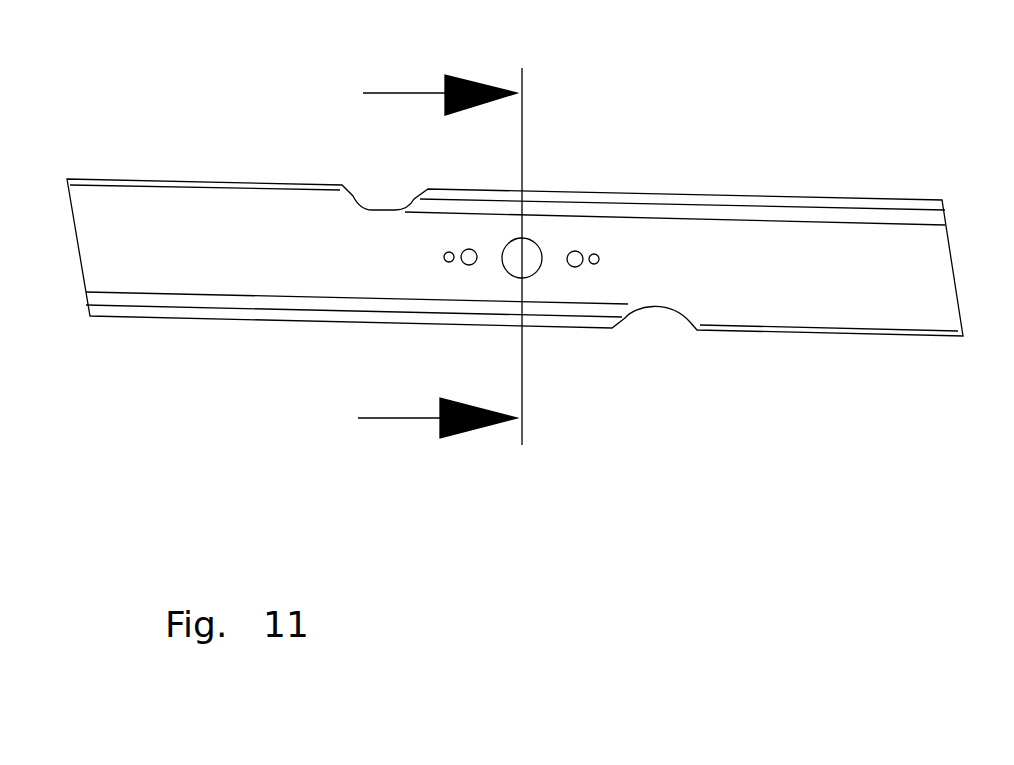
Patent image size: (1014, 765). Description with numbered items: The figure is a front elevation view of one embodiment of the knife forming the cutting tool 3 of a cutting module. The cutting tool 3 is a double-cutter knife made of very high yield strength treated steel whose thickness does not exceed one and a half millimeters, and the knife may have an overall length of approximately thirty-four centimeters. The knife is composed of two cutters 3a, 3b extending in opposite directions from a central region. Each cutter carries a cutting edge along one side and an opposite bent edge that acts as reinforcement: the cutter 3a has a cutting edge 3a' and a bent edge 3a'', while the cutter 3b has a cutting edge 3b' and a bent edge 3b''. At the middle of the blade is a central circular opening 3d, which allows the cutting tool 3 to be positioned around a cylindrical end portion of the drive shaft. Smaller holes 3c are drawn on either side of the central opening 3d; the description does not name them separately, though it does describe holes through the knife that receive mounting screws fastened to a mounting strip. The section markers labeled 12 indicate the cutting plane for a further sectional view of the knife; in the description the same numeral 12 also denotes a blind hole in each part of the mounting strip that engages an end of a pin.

The cutting tool 3 is at (590, 178).
The cutter 3a is at (675, 151).
The cutting edge 3a' is at (829, 378).
The bent edge 3a'' is at (682, 140).
The cutter 3b is at (357, 348).
The cutting edge 3b' is at (205, 125).
The bent edge 3b'' is at (354, 359).
The mounting holes 3c is at (467, 250).
The central circular opening 3d is at (530, 270).
The blind hole 12 is at (382, 24).